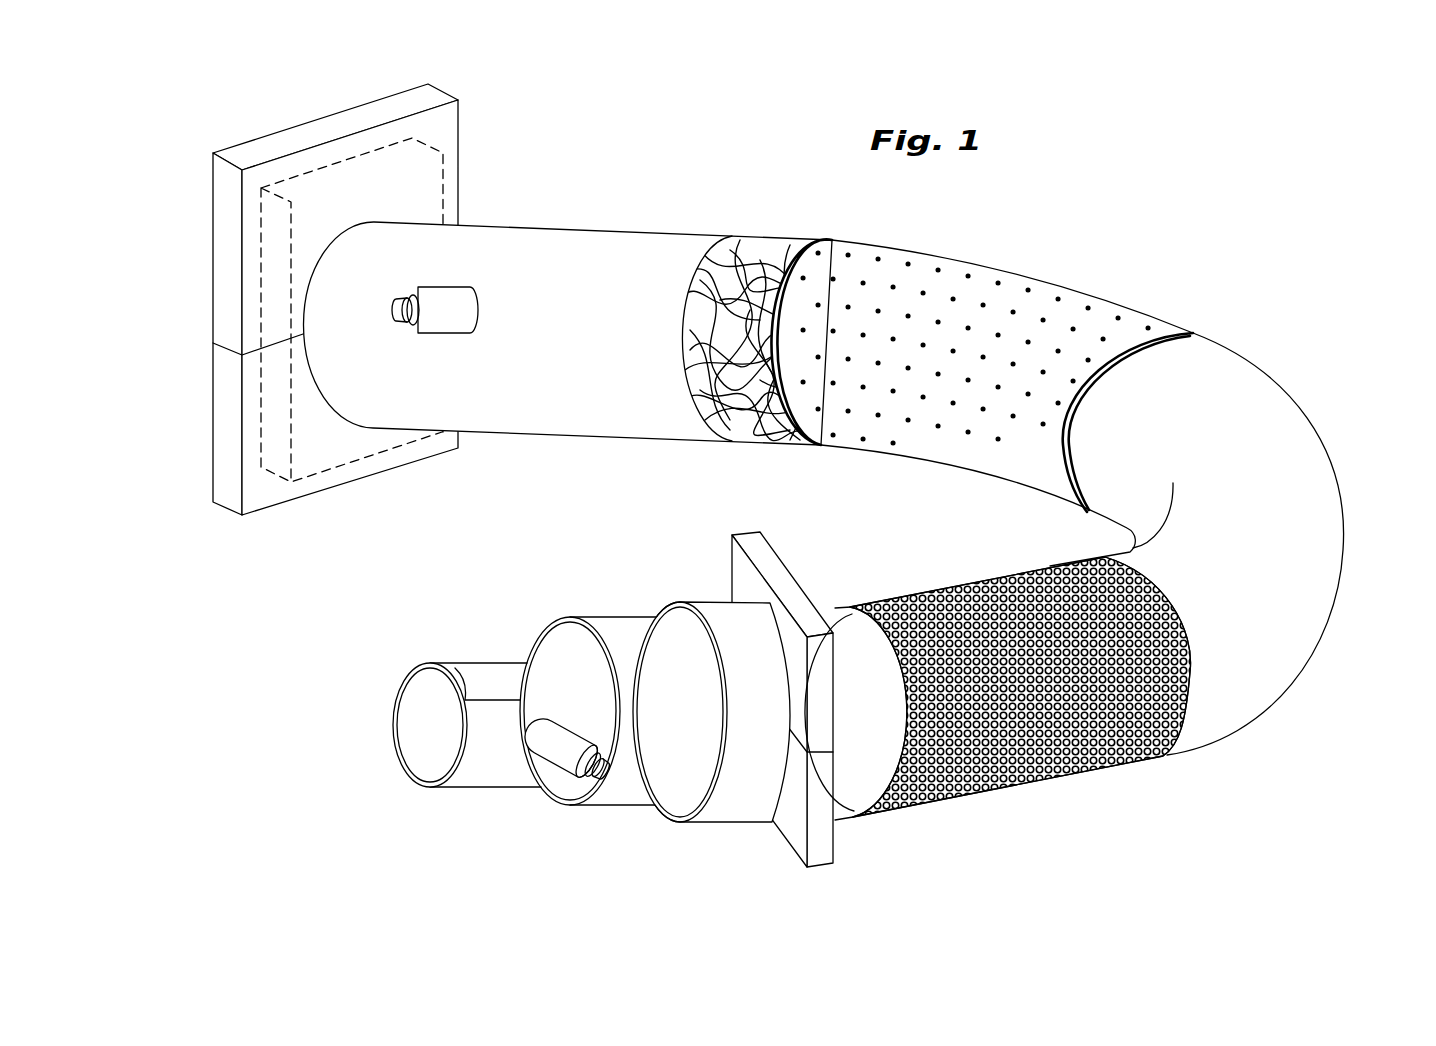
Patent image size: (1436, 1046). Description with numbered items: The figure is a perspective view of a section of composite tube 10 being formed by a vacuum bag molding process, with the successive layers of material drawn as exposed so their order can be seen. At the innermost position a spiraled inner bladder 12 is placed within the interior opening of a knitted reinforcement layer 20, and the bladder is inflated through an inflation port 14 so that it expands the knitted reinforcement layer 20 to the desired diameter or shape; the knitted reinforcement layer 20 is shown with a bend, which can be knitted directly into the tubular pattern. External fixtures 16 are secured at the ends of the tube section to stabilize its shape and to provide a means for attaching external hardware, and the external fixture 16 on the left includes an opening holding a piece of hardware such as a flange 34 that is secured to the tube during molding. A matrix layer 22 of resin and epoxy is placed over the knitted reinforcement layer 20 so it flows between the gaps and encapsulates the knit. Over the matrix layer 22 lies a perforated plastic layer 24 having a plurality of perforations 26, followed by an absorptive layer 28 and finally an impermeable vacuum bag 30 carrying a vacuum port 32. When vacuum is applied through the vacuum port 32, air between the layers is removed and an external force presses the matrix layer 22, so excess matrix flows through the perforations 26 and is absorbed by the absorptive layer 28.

The composite tube 10 is at (724, 162).
The spiraled inner bladder 12 is at (627, 633).
The inflation port 14 is at (557, 743).
The external fixture 16 is at (228, 432).
The knitted reinforcement layer 20 is at (1030, 570).
The matrix layer 22 is at (1252, 428).
The perforated plastic layer 24 is at (1075, 285).
The perforations 26 is at (1008, 305).
The absorptive layer 28 is at (768, 241).
The impermeable vacuum bag 30 is at (535, 243).
The vacuum port 32 is at (470, 312).
The flange 34 is at (415, 190).